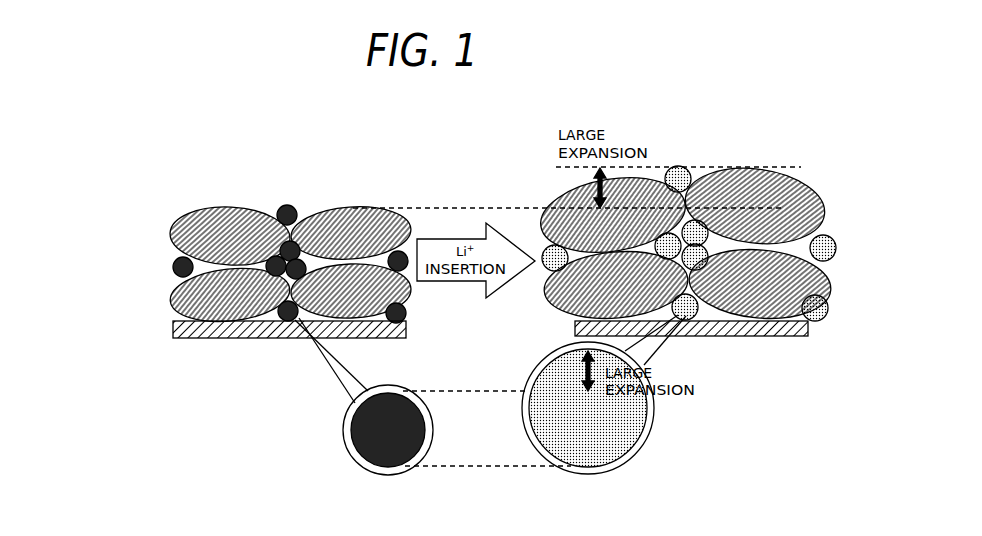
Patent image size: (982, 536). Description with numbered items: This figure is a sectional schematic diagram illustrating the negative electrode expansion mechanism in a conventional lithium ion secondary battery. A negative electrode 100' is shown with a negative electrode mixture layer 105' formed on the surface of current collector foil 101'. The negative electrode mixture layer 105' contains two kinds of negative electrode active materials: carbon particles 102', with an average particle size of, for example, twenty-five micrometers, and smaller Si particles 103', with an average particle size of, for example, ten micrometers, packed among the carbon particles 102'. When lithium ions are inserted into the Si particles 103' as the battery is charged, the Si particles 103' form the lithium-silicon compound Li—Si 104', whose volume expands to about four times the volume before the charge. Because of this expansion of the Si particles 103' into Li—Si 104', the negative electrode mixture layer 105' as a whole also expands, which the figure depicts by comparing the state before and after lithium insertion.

The negative electrode 100' is at (651, 227).
The current collector foil 101' is at (289, 352).
The carbon particles 102' is at (260, 265).
The Si particles 103' is at (290, 244).
The Li—Si 104' is at (689, 222).
The negative electrode mixture layer 105' is at (230, 246).